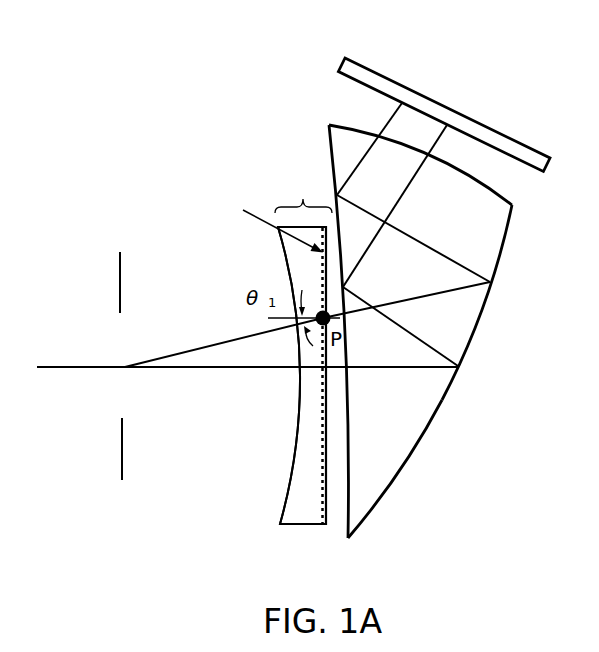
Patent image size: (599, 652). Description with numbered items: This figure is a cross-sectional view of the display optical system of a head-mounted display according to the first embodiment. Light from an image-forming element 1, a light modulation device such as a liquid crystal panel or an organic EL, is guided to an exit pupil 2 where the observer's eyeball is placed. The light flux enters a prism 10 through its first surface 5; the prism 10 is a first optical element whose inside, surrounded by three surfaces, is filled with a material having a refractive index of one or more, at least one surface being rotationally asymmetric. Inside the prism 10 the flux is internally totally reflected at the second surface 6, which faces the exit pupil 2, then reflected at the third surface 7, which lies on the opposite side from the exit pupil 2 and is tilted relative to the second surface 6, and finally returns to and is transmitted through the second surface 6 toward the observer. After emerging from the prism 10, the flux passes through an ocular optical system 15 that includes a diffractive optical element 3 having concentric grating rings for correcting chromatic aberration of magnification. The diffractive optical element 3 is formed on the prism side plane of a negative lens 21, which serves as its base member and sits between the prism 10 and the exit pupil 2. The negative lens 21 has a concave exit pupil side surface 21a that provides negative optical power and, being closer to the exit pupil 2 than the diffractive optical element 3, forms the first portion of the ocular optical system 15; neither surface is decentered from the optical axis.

The image-forming element 1 is at (380, 72).
The exit pupil 2 is at (118, 270).
The diffractive optical element 3 is at (266, 224).
The first surface 5 is at (493, 192).
The second surface 6 is at (328, 131).
The third surface 7 is at (498, 258).
The prism 10 is at (407, 450).
The ocular optical system 15 is at (303, 192).
The negative lens 21 is at (318, 514).
The exit pupil side surface 21a is at (288, 513).